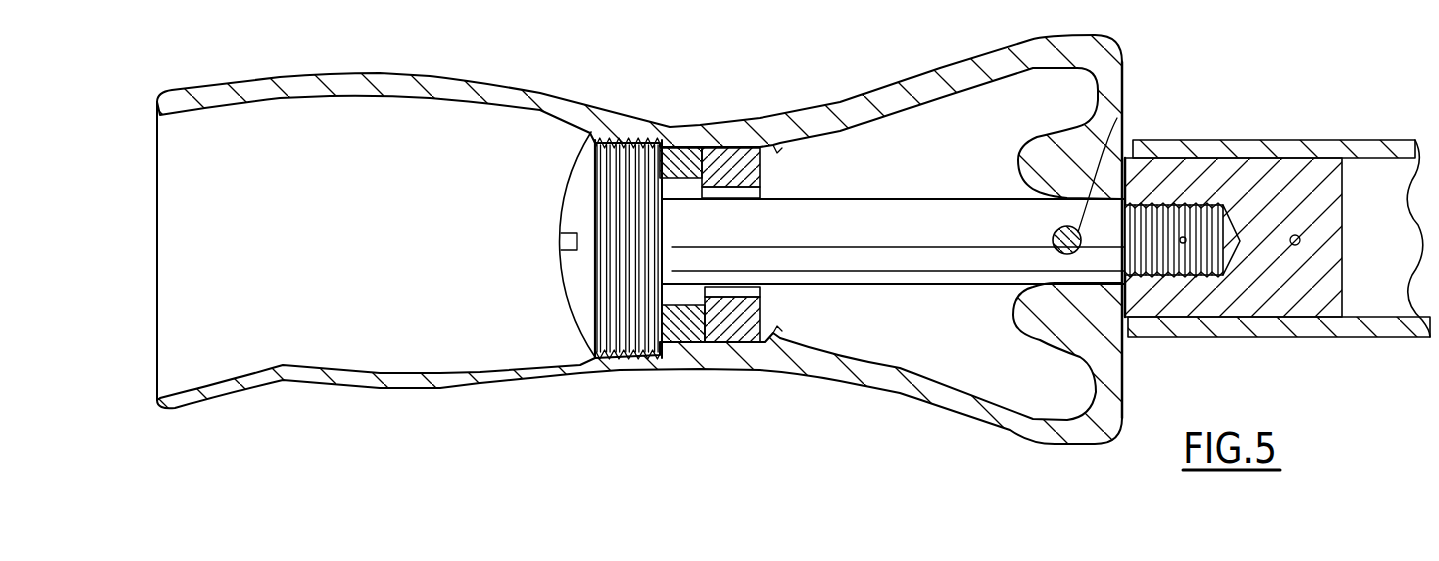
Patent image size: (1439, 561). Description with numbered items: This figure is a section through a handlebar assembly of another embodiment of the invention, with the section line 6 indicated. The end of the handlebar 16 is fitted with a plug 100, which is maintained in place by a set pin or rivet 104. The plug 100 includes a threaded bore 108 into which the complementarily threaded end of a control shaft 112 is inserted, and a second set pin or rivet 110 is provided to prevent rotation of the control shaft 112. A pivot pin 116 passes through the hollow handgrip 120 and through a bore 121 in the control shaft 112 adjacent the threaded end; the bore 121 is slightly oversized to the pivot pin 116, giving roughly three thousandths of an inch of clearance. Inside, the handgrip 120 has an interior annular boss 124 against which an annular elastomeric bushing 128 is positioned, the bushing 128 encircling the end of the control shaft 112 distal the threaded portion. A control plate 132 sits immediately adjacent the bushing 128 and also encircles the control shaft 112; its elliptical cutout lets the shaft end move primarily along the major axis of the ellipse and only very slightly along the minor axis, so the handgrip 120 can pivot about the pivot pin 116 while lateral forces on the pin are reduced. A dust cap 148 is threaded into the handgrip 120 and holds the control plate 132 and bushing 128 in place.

The section line 6- 6 is at (702, 105).
The handlebar 16 is at (1367, 140).
The plug 100 is at (1273, 187).
The set pin or rivet 104 is at (1300, 237).
The threaded bore 108 is at (1178, 205).
The set pin or rivet 110 is at (1181, 243).
The control shaft 112 is at (955, 237).
The pivot pin 116 is at (1055, 232).
The handgrip 120 is at (903, 86).
The bore 121 is at (1117, 118).
The interior annular boss 124 is at (782, 150).
The annular elastomeric bushing 128 is at (728, 160).
The control plate 132 is at (683, 157).
The dust cap 148 is at (568, 277).